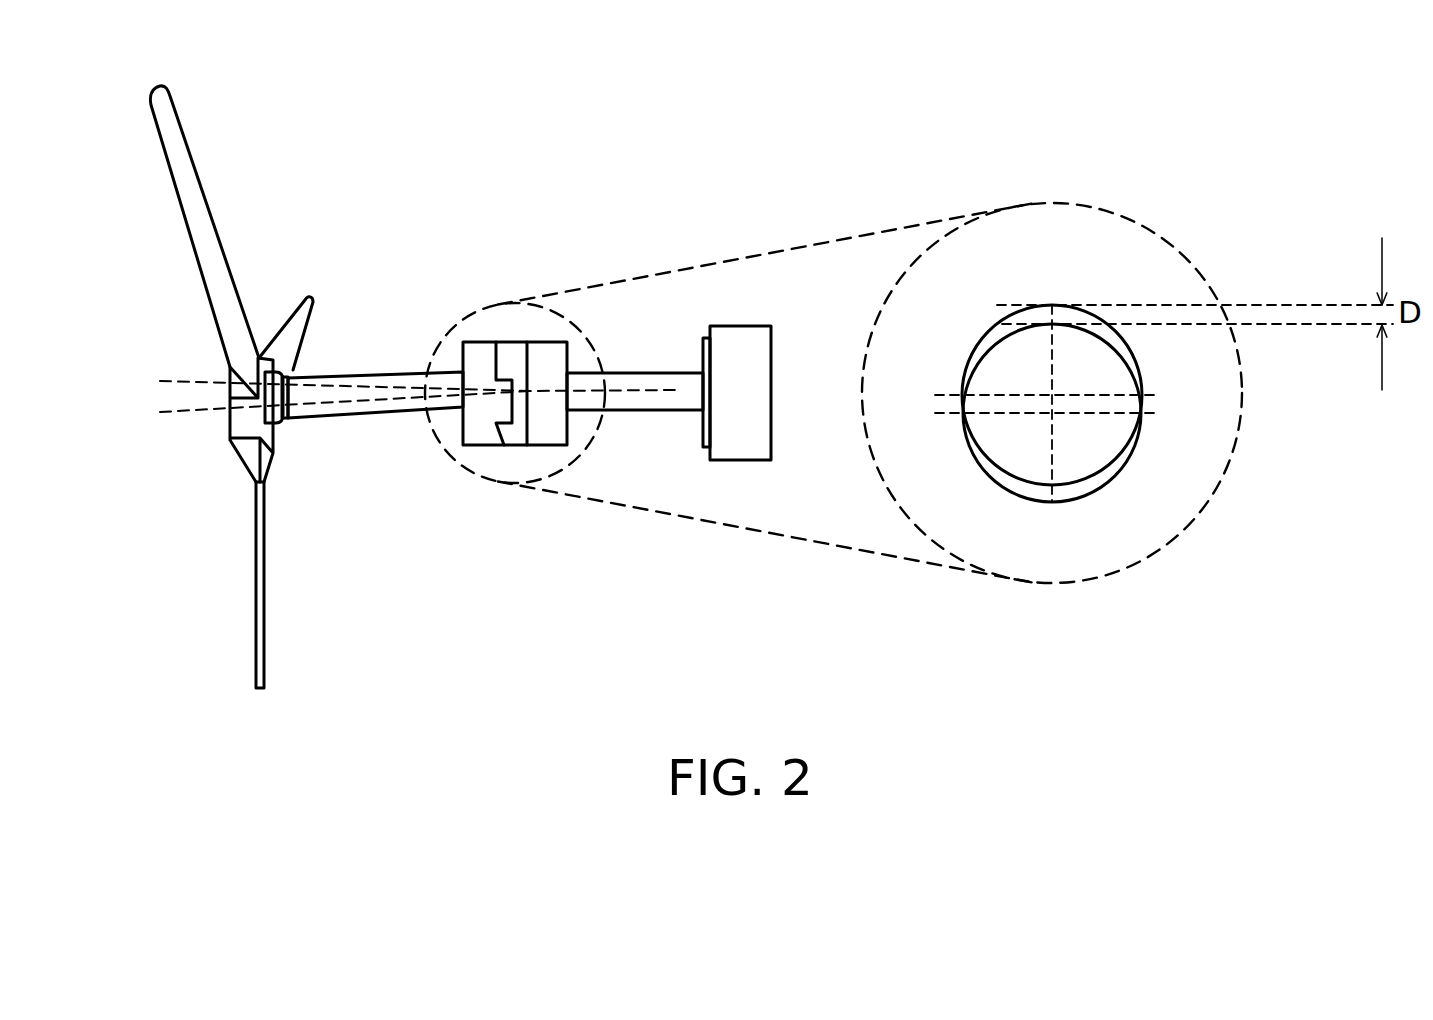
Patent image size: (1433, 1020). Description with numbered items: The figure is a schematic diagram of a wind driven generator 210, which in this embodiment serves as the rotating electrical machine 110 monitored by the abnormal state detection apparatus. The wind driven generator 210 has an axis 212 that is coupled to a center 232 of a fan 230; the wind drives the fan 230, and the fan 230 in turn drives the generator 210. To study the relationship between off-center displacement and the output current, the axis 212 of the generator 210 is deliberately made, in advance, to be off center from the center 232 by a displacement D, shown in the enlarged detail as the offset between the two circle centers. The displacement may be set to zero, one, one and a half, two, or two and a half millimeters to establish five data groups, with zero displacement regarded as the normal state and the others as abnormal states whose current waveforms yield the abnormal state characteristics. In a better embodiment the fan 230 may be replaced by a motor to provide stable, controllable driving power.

The fan 230 is at (187, 231).
The center of the fan 232 is at (372, 375).
The axis 212 is at (650, 373).
The wind driven generator 210 is at (510, 445).
The rotating electrical machine 110 is at (740, 462).